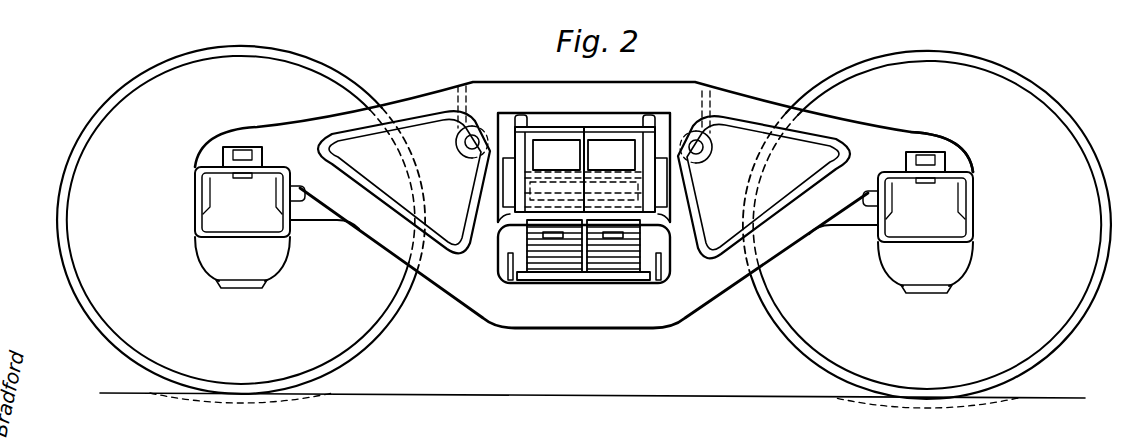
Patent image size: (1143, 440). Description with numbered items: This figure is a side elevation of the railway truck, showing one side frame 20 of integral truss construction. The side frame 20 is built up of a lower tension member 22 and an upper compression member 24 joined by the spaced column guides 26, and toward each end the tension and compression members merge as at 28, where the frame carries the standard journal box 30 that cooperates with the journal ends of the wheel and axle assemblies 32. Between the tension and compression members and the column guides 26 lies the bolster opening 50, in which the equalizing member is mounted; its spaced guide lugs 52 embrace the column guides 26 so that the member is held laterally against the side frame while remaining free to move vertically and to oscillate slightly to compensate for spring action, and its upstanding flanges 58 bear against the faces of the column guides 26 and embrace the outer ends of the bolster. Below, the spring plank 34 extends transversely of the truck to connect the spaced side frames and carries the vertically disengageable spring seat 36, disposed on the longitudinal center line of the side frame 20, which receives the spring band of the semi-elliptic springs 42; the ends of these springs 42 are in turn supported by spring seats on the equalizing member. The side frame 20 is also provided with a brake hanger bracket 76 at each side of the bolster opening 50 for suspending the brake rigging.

The side frame 20 is at (584, 195).
The tension member 22 is at (686, 308).
The compression member 24 is at (493, 81).
The column guides 26 is at (677, 198).
The merged end portion of tension and compression members 28 is at (882, 137).
The journal box 30 is at (203, 244).
The wheel and axle assemblies 32 is at (122, 114).
The spring plank 34 is at (634, 285).
The spring seat 36 is at (548, 281).
The semi-elliptic springs 42 is at (610, 259).
The bolster opening 50 is at (548, 120).
The guide lugs 52 is at (515, 176).
The upstanding flanges 58 is at (522, 126).
The brake hanger brackets 76 is at (464, 143).